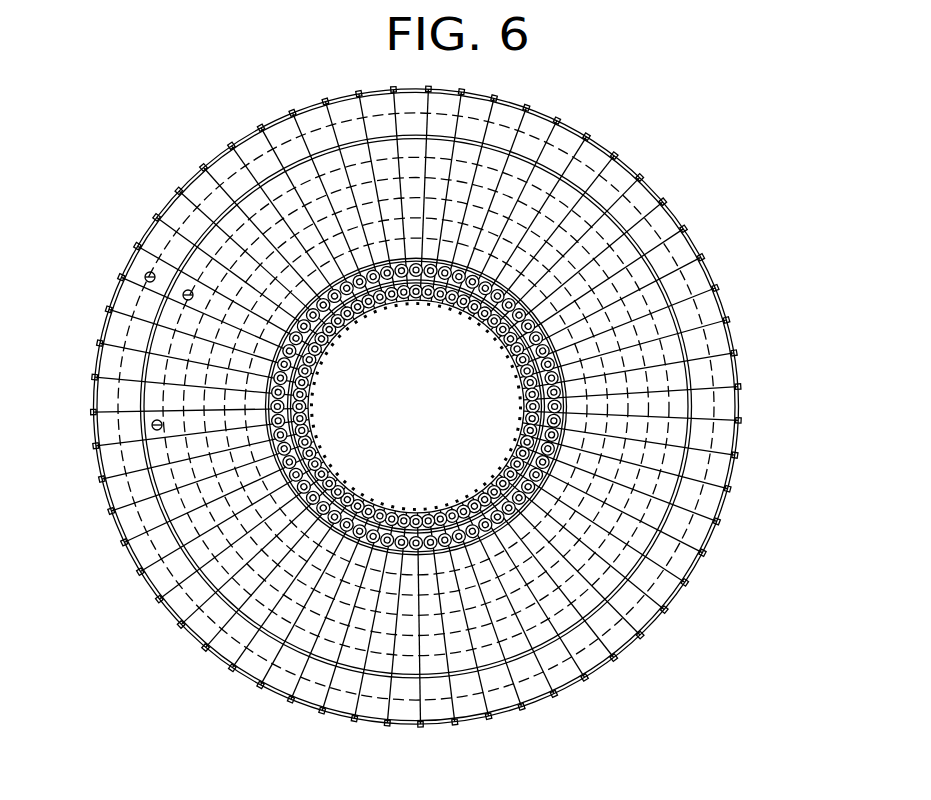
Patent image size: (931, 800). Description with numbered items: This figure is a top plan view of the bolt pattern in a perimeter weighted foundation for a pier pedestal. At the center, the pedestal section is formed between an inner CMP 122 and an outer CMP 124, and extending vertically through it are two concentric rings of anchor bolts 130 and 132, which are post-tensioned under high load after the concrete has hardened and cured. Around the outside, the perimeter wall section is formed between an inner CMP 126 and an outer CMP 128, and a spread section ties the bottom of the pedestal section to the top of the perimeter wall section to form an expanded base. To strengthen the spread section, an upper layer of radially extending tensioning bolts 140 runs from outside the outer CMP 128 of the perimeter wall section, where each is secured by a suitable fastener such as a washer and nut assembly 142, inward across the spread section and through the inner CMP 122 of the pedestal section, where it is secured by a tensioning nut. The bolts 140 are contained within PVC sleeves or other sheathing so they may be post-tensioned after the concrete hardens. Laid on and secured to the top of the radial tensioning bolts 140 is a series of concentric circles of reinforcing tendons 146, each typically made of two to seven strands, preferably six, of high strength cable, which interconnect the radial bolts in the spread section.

The inner CMP 122 is at (484, 330).
The outer CMP 124 is at (625, 171).
The inner CMP 126 is at (170, 606).
The outer CMP 128 is at (210, 663).
The anchor bolts 130 is at (493, 484).
The anchor bolts 132 is at (392, 508).
The upper layer of tensioning bolts 140 is at (712, 478).
The washer and nut assembly 142 is at (706, 556).
The reinforcing tendons 146 is at (730, 339).